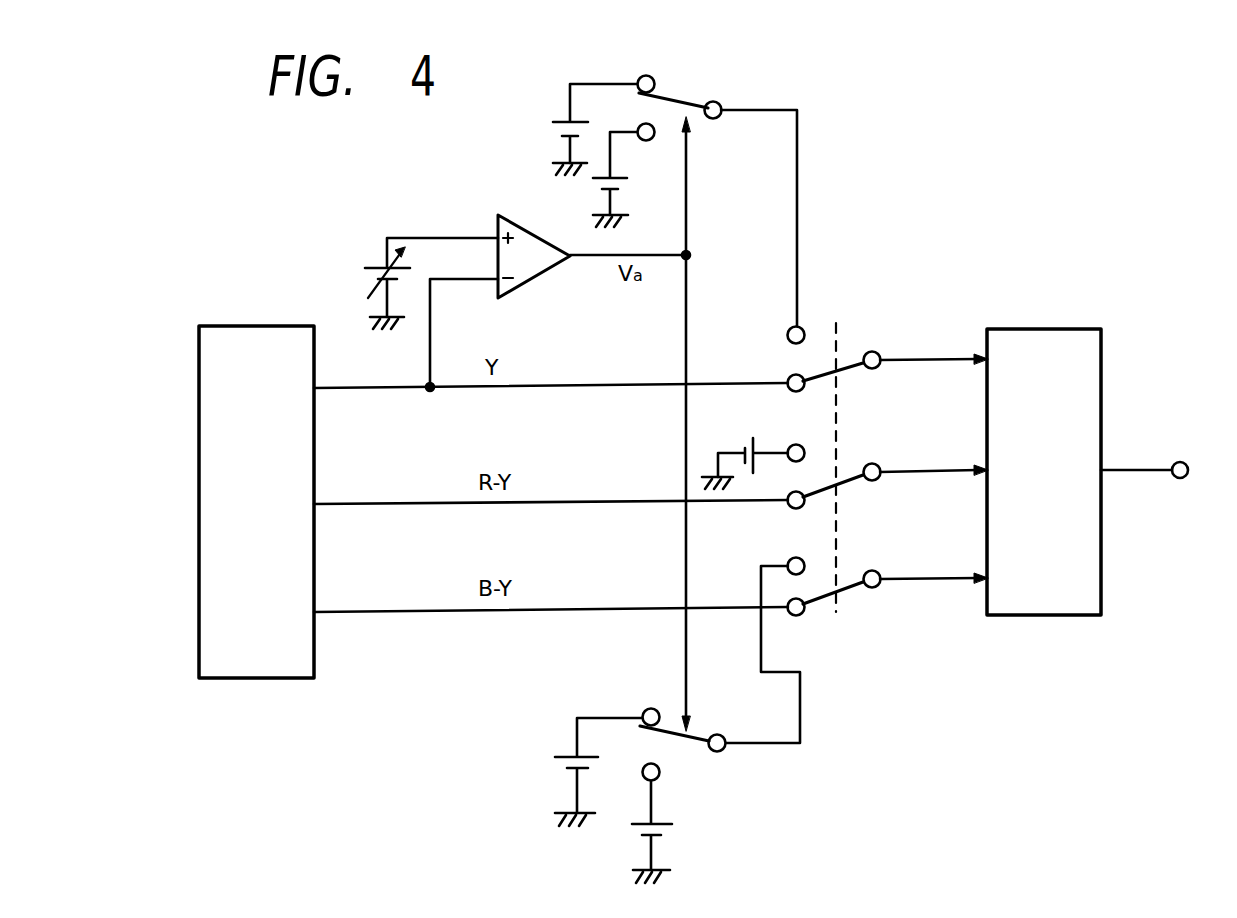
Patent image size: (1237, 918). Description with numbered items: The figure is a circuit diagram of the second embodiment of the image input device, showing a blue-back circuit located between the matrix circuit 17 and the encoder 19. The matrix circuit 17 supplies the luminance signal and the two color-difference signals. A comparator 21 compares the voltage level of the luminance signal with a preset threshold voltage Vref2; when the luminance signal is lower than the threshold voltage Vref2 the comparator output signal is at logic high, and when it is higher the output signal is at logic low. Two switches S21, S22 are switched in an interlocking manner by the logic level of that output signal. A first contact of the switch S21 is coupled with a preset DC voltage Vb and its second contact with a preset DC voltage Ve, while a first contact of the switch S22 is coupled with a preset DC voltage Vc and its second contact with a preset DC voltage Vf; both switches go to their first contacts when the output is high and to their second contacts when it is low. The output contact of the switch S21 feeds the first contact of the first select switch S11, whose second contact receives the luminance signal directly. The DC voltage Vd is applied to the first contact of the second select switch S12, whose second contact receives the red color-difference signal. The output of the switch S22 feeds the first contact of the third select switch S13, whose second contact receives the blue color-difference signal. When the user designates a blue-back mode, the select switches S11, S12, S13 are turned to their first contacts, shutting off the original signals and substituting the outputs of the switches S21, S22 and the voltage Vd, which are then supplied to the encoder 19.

The matrix circuit 17 is at (290, 326).
The encoder 19 is at (1075, 329).
The comparator 21 is at (537, 276).
The first select switch S11 is at (855, 352).
The second select switch S12 is at (855, 463).
The third select switch S13 is at (855, 569).
The switch S21 is at (690, 98).
The switch S22 is at (705, 732).
The preset threshold voltage Vref2 is at (361, 270).
The preset DC voltage Vb is at (550, 122).
The preset DC voltage Vc is at (676, 838).
The DC voltage Vd is at (744, 437).
The preset DC voltage Ve is at (654, 184).
The preset DC voltage Vf is at (554, 759).